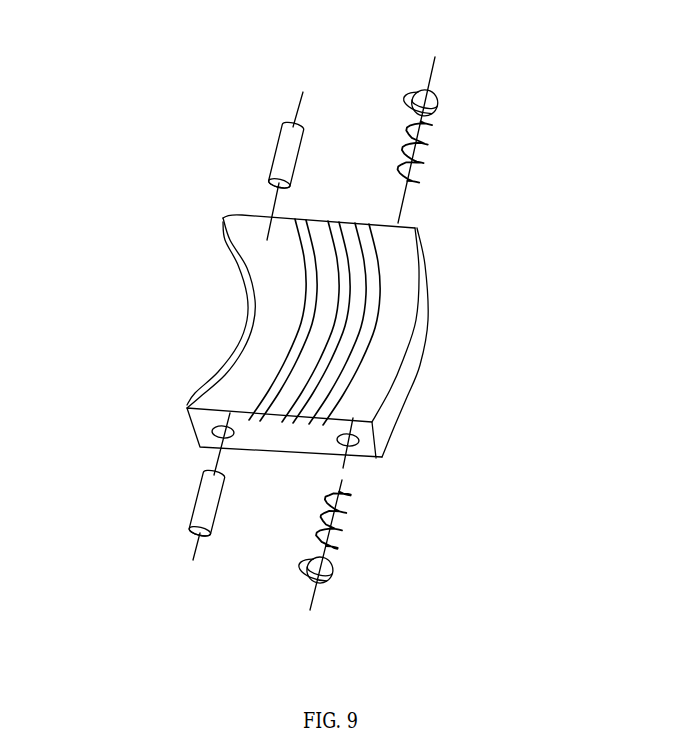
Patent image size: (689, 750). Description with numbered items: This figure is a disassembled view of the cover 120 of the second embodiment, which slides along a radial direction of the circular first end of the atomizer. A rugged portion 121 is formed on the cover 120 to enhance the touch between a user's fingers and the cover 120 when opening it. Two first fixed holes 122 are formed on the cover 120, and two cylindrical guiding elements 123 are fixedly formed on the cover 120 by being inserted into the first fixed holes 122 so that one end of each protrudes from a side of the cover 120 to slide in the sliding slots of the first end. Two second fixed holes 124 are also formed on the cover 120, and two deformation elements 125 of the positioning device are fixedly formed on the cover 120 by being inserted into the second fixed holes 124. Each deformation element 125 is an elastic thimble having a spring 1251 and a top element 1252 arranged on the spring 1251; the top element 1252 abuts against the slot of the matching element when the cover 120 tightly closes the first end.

The cover 120 is at (413, 363).
The rugged portion 121 is at (363, 307).
The first fixed hole 122 is at (218, 436).
The guiding element 123 is at (283, 158).
The second fixed hole 124 is at (353, 447).
The deformation element 125 is at (356, 351).
The spring 1251 is at (415, 165).
The top element 1252 is at (437, 100).